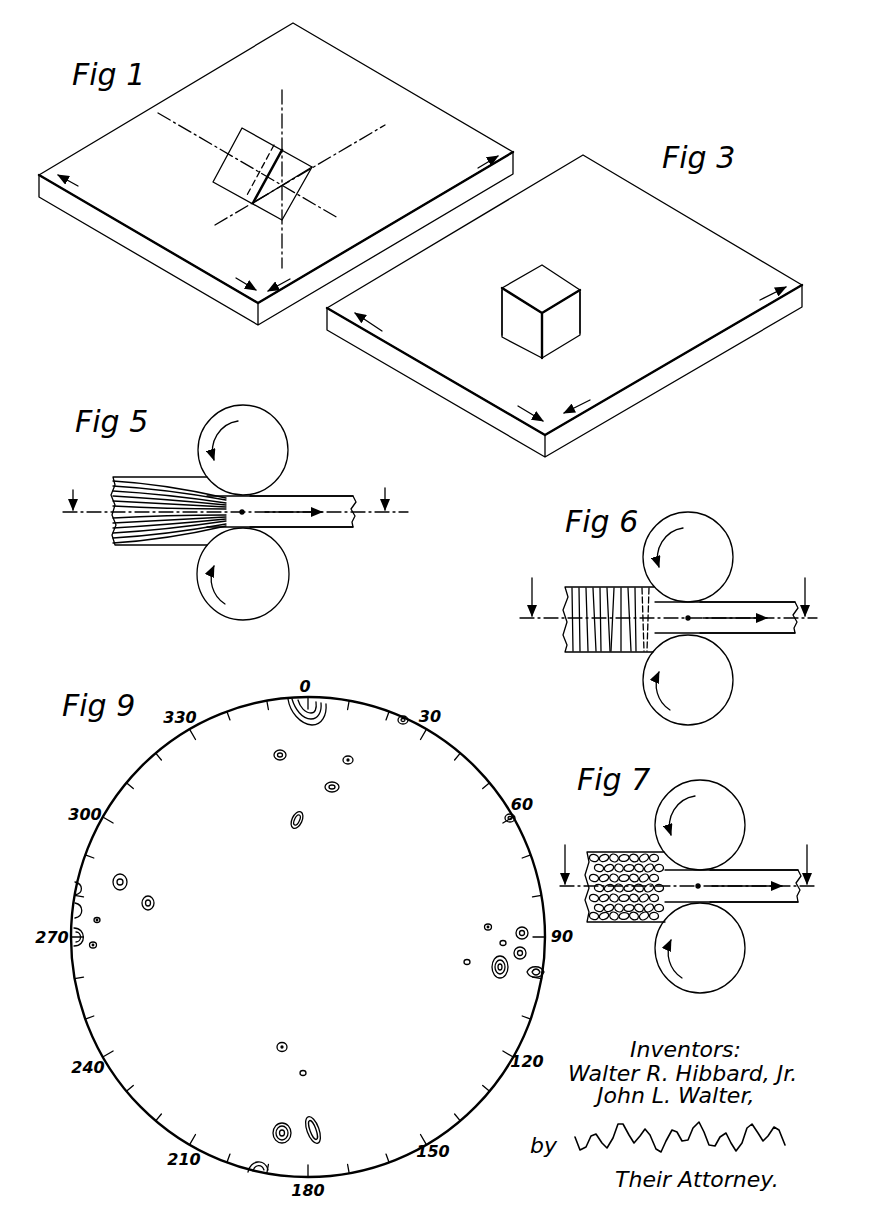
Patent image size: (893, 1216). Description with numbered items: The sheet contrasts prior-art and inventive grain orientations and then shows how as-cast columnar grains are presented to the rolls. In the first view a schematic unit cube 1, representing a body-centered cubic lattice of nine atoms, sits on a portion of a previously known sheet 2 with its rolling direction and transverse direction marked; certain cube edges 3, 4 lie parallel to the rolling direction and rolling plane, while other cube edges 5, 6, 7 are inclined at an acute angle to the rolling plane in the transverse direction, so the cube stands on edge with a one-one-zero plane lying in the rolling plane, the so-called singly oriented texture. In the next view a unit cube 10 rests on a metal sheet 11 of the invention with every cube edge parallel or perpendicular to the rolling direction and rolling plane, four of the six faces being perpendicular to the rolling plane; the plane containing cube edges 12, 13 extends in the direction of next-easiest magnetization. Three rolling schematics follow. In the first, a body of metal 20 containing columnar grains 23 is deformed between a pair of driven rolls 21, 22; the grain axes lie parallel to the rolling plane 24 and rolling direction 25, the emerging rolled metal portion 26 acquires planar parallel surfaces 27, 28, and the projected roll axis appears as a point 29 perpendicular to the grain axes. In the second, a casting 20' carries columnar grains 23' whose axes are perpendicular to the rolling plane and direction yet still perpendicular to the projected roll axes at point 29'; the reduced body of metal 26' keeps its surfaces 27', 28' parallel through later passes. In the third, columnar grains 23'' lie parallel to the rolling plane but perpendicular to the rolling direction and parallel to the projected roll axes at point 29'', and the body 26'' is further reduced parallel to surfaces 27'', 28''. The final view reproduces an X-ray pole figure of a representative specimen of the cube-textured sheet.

In FIG. 1, the schematic unit cube 1 is at (247, 129).
In FIG. 1, the sheet 2 is at (443, 118).
In FIG. 1, the cube edge 3 is at (216, 191).
In FIG. 1, the cube edge 4 is at (261, 143).
In FIG. 1, the cube edge 5 is at (294, 158).
In FIG. 1, the cube edge 6 is at (310, 183).
In FIG. 1, the cube edge 7 is at (257, 216).
In FIG. 3, the unit cube 10 is at (557, 273).
In FIG. 3, the metal sheet 11 is at (705, 236).
In FIG. 3, the cube edge 12 is at (502, 310).
In FIG. 3, the cube edge 13 is at (584, 311).
In FIG. 5, the body of metal 20 is at (167, 516).
In FIG. 7, the body of metal 20 is at (625, 891).
In FIG. 5, the driven roll 21 is at (280, 431).
In FIG. 6, the driven roll 21 is at (717, 534).
In FIG. 7, the driven roll 21 is at (727, 796).
In FIG. 5, the driven roll 22 is at (278, 603).
In FIG. 6, the driven roll 22 is at (722, 703).
In FIG. 7, the driven roll 22 is at (730, 980).
In FIG. 5, the columnar grains 23 is at (167, 531).
In FIG. 5, the rolling plane 24 is at (235, 491).
In FIG. 6, the rolling plane 24 is at (669, 586).
In FIG. 7, the rolling plane 24 is at (686, 853).
In FIG. 5, the rolling direction 25 is at (293, 502).
In FIG. 6, the rolling direction 25 is at (735, 607).
In FIG. 7, the rolling direction 25 is at (747, 876).
In FIG. 5, the rolled metal portion 26 is at (287, 508).
In FIG. 5, the surface 27 is at (301, 471).
In FIG. 5, the surface 28 is at (301, 548).
In FIG. 5, the point 29 is at (277, 532).
In FIG. 6, the casting 20' is at (608, 622).
In FIG. 6, the columnar grains 23' is at (605, 638).
In FIG. 6, the body of metal 26' is at (726, 617).
In FIG. 6, the surface 27' is at (747, 578).
In FIG. 6, the surface 28' is at (747, 656).
In FIG. 6, the point 29' is at (725, 639).
In FIG. 7, the columnar grains 23'' is at (626, 908).
In FIG. 7, the body 26'' is at (737, 880).
In FIG. 7, the surface 27'' is at (754, 841).
In FIG. 7, the surface 28'' is at (759, 925).
In FIG. 7, the point 29'' is at (737, 907).